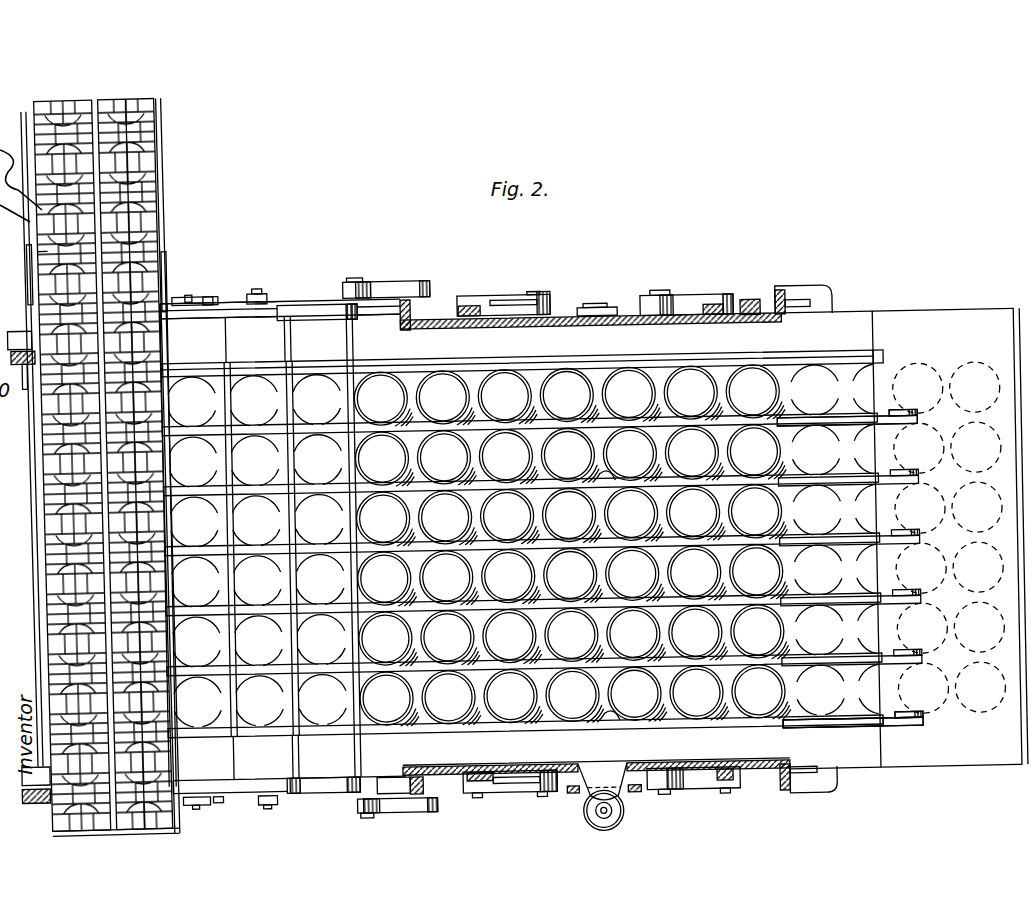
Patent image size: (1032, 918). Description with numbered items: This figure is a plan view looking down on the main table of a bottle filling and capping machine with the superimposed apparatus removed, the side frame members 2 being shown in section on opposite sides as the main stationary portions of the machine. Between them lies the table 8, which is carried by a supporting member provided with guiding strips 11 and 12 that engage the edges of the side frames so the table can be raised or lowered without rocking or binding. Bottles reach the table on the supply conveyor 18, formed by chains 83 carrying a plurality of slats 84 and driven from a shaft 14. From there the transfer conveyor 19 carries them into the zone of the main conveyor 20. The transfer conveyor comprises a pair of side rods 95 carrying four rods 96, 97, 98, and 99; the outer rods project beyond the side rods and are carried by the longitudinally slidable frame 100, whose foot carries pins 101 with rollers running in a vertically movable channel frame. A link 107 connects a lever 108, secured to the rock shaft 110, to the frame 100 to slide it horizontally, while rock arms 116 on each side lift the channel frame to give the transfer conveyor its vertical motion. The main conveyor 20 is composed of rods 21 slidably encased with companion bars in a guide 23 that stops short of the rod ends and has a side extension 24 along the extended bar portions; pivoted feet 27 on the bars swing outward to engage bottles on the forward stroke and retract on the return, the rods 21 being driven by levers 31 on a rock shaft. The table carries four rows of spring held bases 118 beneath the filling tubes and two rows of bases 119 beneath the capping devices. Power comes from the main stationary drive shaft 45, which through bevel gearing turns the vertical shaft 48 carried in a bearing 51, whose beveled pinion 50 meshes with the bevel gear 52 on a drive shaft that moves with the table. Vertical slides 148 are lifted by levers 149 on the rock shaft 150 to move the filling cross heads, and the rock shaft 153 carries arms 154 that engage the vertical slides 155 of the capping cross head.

The side frame member 2 is at (759, 310).
The table 8 is at (851, 320).
The guiding strip 11 is at (804, 298).
The guiding strip 12 is at (390, 315).
The drive shaft 14 is at (38, 247).
The supply conveyor 18 is at (175, 197).
The transfer conveyor 19 is at (254, 349).
The main conveyor 20 is at (733, 740).
The rod 21 is at (884, 411).
The guide 23 is at (750, 735).
The side extension 24 is at (812, 729).
The foot 27 is at (612, 471).
The lever 31 is at (914, 410).
The main stationary drive shaft 45 is at (603, 306).
The vertical shaft 48 is at (592, 815).
The beveled pinion 50 is at (610, 826).
The bearing 51 is at (615, 773).
The bevel gear 52 is at (641, 793).
The chain 83 is at (140, 832).
The slat 84 is at (145, 252).
The side rod 95 is at (208, 370).
The rod 96 is at (176, 716).
The rod 97 is at (237, 716).
The rod 98 is at (299, 716).
The rod 99 is at (361, 716).
The longitudinally slidable frame 100 is at (330, 322).
The pin 101 is at (264, 290).
The link 107 is at (413, 303).
The lever 108 is at (375, 291).
The rock shaft 110 is at (358, 278).
The rock arm 116 is at (189, 291).
The spring held base 118 is at (446, 394).
The spring held base 119 is at (693, 390).
The vertical slide 148 is at (449, 316).
The lever 149 is at (496, 305).
The rock shaft 150 is at (545, 294).
The rock shaft 153 is at (664, 300).
The arm 154 is at (685, 296).
The vertical slide 155 is at (748, 312).